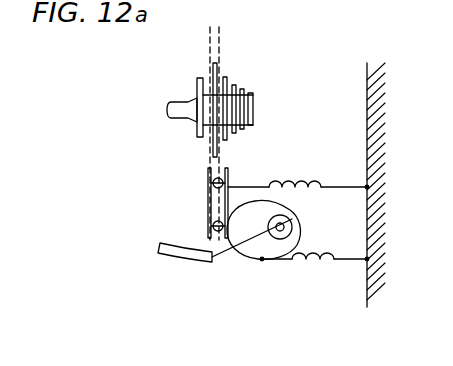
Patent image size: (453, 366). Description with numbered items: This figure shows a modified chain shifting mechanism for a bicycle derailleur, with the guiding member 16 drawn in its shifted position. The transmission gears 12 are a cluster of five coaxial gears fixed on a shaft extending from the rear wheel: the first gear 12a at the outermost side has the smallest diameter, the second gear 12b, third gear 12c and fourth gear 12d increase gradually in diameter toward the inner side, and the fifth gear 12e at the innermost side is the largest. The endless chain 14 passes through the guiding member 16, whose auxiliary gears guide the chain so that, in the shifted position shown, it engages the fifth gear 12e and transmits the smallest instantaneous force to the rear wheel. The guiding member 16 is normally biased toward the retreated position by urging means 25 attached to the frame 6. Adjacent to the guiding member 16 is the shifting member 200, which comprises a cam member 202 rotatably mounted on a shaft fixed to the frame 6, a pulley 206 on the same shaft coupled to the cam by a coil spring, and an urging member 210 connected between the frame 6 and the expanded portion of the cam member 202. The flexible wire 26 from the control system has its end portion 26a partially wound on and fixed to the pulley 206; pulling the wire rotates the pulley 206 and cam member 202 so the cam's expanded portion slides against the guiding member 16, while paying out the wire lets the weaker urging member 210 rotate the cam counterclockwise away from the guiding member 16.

The endless chain 14 is at (210, 32).
The transmission gears 12 is at (282, 88).
The first gear 12a is at (279, 123).
The second gear 12b is at (242, 90).
The third gear 12c is at (234, 86).
The fourth gear 12d is at (225, 78).
The fifth gear 12e is at (215, 64).
The guiding member 16 is at (208, 198).
The urging means 25 is at (305, 180).
The frame 6 is at (395, 194).
The cam member 202 is at (250, 238).
The pulley 206 is at (292, 222).
The flexible wire 26 is at (168, 263).
The end portion of the flexible wire 26a is at (217, 263).
The urging member 210 is at (313, 264).
The shifting member 200 is at (278, 271).